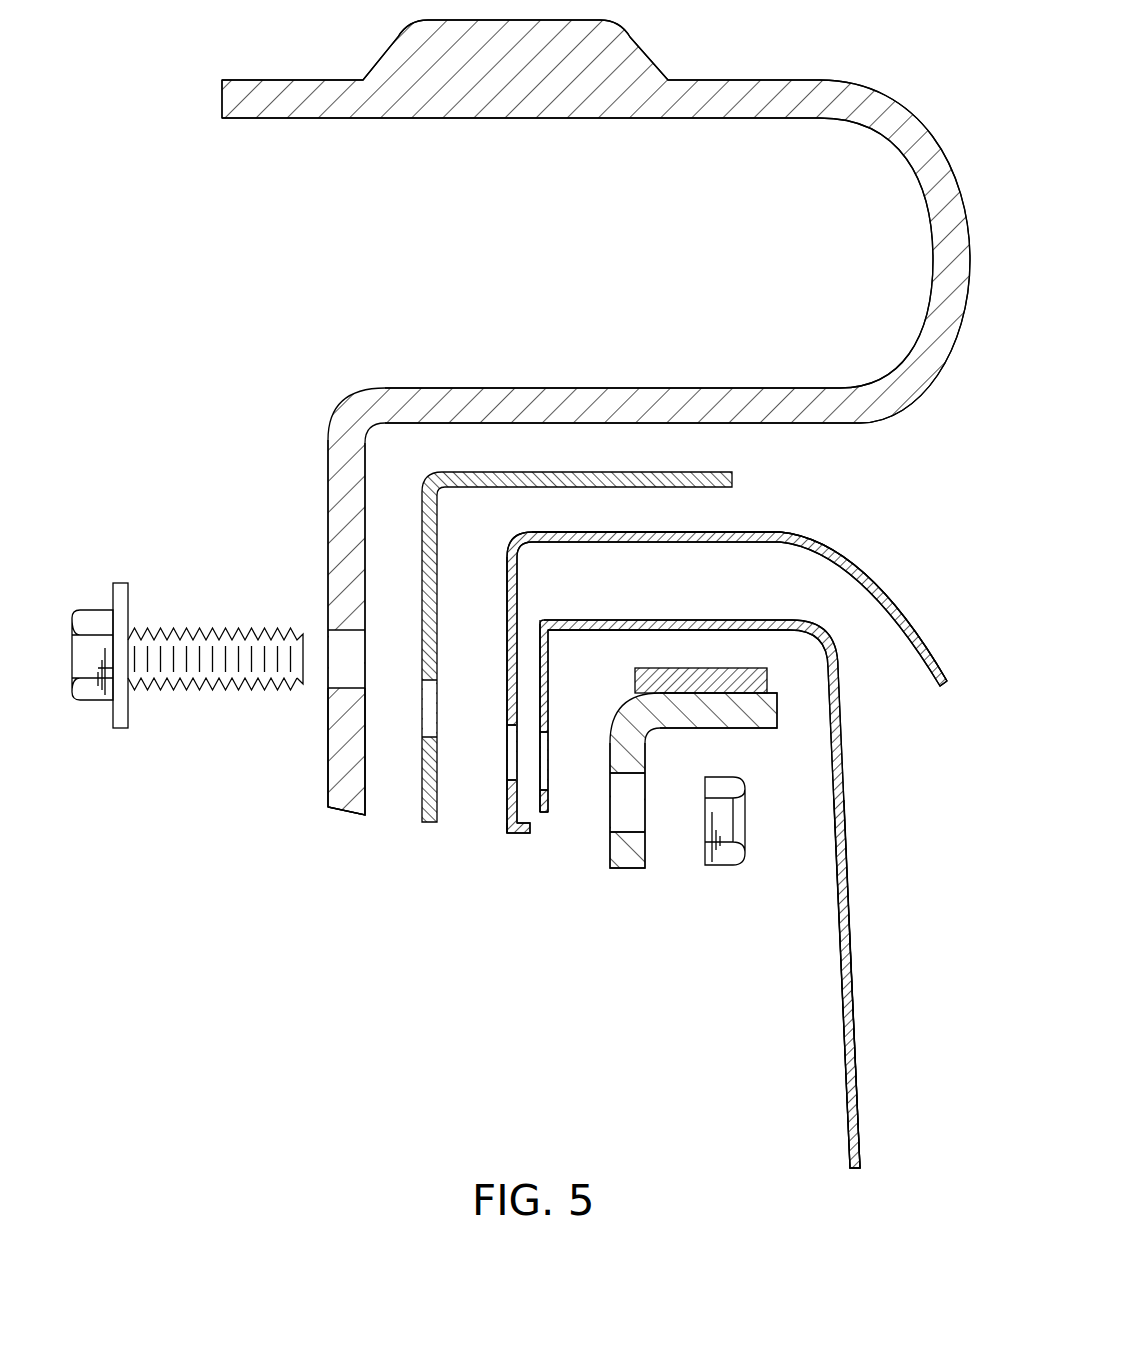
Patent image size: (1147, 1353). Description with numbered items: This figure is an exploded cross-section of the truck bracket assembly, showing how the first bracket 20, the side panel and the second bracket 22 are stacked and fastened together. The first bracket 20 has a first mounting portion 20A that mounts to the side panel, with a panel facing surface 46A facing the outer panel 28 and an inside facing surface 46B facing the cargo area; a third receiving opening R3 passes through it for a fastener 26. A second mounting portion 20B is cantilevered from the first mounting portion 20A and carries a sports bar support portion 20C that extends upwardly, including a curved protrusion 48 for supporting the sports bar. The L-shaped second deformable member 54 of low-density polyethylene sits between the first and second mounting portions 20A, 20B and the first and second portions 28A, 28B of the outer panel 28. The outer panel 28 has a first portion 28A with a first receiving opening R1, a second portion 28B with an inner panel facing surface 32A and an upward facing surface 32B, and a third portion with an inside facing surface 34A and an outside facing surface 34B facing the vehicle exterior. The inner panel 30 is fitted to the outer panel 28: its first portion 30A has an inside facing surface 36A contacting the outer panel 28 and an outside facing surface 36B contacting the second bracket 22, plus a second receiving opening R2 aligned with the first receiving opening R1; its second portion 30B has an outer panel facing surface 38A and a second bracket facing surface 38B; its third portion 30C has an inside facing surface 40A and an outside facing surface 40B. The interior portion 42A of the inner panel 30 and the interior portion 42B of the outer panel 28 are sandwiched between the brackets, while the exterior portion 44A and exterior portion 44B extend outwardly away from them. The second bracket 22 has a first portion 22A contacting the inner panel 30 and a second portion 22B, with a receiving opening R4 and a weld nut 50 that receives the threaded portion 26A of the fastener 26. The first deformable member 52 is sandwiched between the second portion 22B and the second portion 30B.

The first bracket 20 is at (265, 412).
The first mounting portion 20A is at (325, 778).
The second mounting portion 20B is at (553, 386).
The sports bar support portion 20C is at (712, 78).
The curved protrusion 48 is at (935, 172).
The panel facing surface 46A is at (365, 786).
The inside facing surface 46B is at (328, 738).
The third receiving opening R3 is at (345, 632).
The second deformable member 54 is at (425, 515).
The outer panel 28 is at (865, 530).
The first portion 28A is at (509, 630).
The second portion 28B is at (673, 532).
The inner panel facing surface 32A is at (640, 543).
The upward facing surface 32B is at (612, 532).
The inside facing surface 34A is at (923, 672).
The outside facing surface 34B is at (917, 645).
The first receiving opening R1 is at (512, 783).
The first portion 30A is at (508, 808).
The interior portion 42A is at (508, 897).
The interior portion 42B is at (790, 512).
The exterior portion 44A is at (890, 978).
The exterior portion 44B is at (880, 568).
The inner panel 30 is at (838, 660).
The second portion 30B is at (660, 620).
The third portion 30C is at (853, 892).
The inside facing surface 36A is at (540, 678).
The outside facing surface 36B is at (548, 700).
The outer panel facing surface 38A is at (742, 620).
The second bracket facing surface 38B is at (645, 630).
The inside facing surface 40A is at (842, 1010).
The outside facing surface 40B is at (843, 807).
The second receiving opening R2 is at (547, 787).
The first deformable member 52 is at (702, 680).
The second bracket 22 is at (613, 895).
The first portion 22A is at (633, 852).
The second portion 22B is at (760, 712).
The receiving opening R4 is at (812, 832).
The weld nut 50 is at (747, 843).
The fastener 26 is at (186, 634).
The threaded portion 26A is at (232, 690).